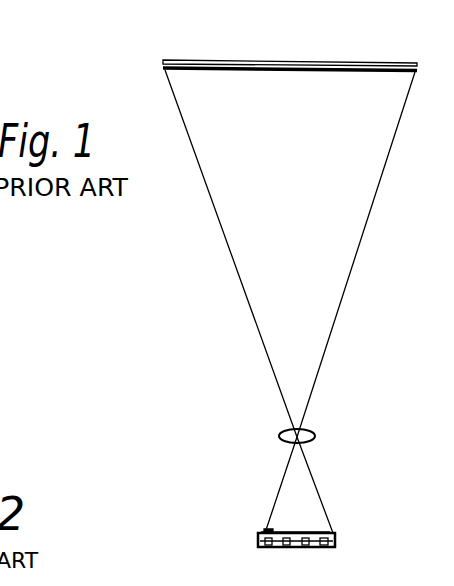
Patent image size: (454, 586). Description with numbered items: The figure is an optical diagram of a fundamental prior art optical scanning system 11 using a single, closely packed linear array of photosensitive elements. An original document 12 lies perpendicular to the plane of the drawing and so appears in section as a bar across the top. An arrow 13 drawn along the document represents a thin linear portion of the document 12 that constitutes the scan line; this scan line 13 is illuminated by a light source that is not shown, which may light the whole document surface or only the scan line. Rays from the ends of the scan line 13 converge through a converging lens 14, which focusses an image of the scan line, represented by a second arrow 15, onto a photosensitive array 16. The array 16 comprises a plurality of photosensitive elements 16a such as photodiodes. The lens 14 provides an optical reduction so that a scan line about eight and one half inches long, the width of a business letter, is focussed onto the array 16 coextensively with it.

The optical scanning system 11 is at (217, 54).
The original document 12 is at (384, 62).
The scan line 13 is at (264, 72).
The converging lens 14 is at (315, 434).
The image of the scan line 15 is at (310, 532).
The photosensitive array 16 is at (337, 545).
The photosensitive elements 16a is at (327, 548).